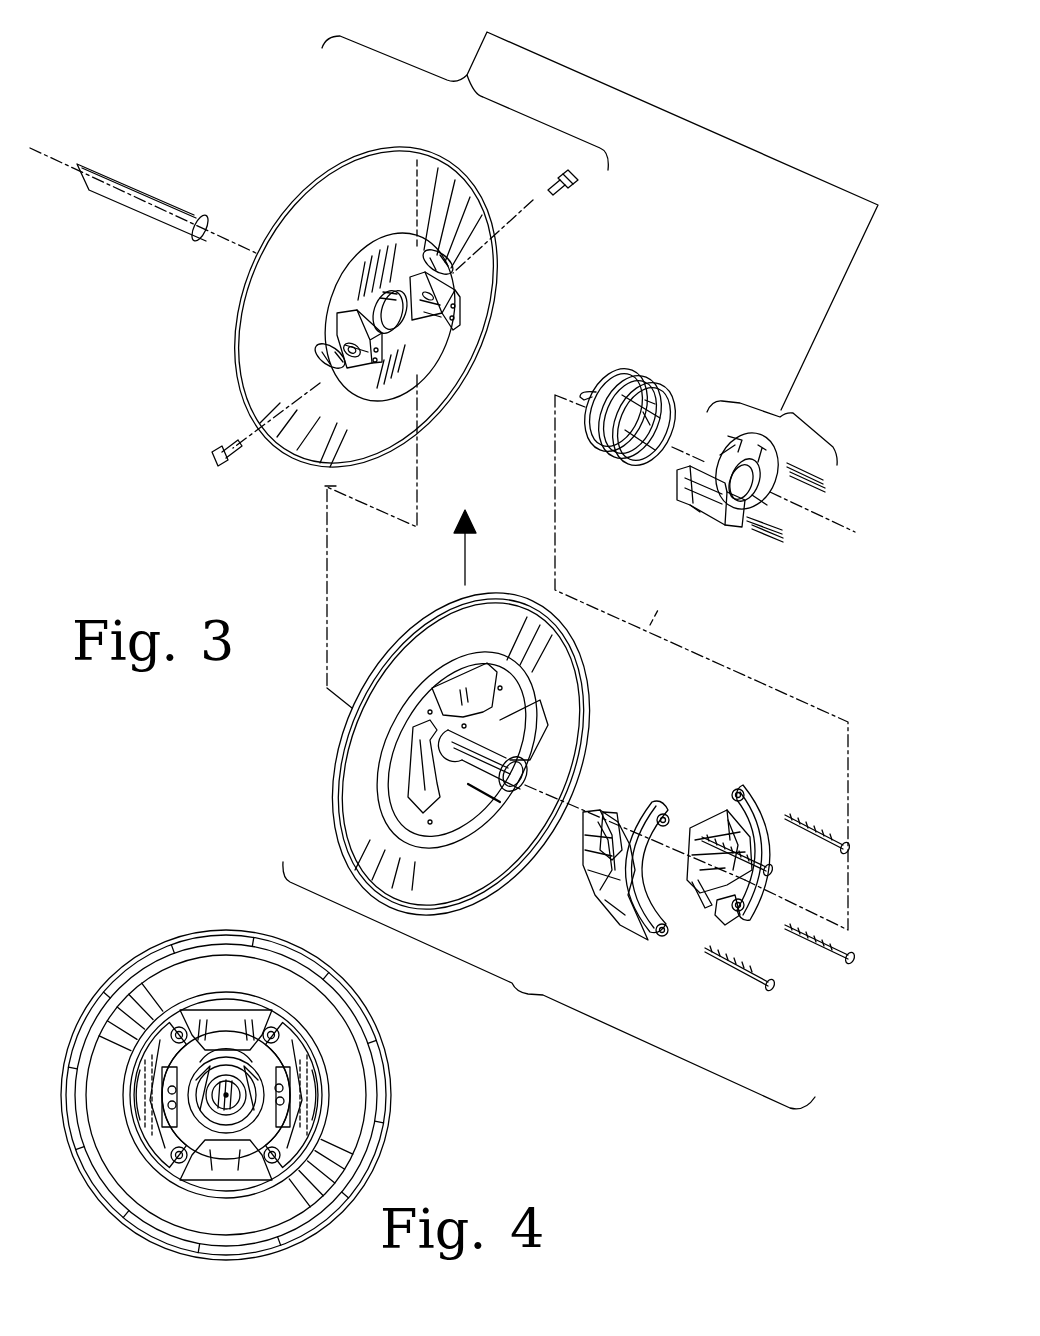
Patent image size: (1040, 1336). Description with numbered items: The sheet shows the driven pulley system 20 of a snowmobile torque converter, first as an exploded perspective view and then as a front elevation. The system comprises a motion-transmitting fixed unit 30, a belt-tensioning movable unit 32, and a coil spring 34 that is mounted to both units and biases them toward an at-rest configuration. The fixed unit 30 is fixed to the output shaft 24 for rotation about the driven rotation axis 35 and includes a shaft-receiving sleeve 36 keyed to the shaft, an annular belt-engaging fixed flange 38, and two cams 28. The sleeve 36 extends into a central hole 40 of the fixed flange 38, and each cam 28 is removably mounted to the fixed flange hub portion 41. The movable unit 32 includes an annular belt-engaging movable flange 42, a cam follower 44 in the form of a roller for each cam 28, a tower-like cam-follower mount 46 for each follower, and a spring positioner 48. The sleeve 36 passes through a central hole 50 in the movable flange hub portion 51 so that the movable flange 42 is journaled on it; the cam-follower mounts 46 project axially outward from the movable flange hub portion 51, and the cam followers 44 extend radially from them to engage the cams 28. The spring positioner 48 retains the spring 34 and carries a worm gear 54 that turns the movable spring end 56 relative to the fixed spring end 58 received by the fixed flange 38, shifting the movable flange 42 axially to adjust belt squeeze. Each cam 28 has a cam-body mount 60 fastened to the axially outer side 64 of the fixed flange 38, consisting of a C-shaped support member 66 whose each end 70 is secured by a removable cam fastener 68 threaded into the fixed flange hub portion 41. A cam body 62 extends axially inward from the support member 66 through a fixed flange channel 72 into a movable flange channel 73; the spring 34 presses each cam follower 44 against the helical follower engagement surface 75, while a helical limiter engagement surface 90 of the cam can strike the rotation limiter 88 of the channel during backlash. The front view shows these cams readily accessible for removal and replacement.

In FIG. 3, the driven pulley system 20 is at (180, 84).
In FIG. 4, the driven pulley system 20 is at (112, 942).
In FIG. 3, the output shaft 24 is at (122, 208).
In FIG. 4, the output shaft 24 is at (226, 1115).
In FIG. 3, the cam 28 is at (765, 770).
In FIG. 4, the cam 28 is at (300, 1035).
In FIG. 3, the motion-transmitting fixed unit 30 is at (549, 985).
In FIG. 3, the belt-tensioning movable unit 32 is at (715, 140).
In FIG. 3, the coil spring 34 is at (615, 385).
In FIG. 3, the driven rotation axis 35 is at (666, 598).
In FIG. 3, the shaft-receiving sleeve 36 is at (538, 795).
In FIG. 4, the shaft-receiving sleeve 36 is at (232, 1172).
In FIG. 3, the fixed flange 38 is at (598, 700).
In FIG. 4, the fixed flange 38 is at (208, 972).
In FIG. 3, the central hole 40 is at (462, 790).
In FIG. 3, the fixed flange hub portion 41 is at (495, 805).
In FIG. 4, the fixed flange hub portion 41 is at (260, 1012).
In FIG. 3, the movable flange 42 is at (292, 200).
In FIG. 3, the cam follower 44 is at (580, 183).
In FIG. 3, the cam-follower mount 46 is at (462, 335).
In FIG. 3, the spring positioner 48 is at (750, 560).
In FIG. 4, the spring positioner 48 is at (215, 1160).
In FIG. 3, the central hole 50 is at (390, 294).
In FIG. 3, the movable flange hub portion 51 is at (365, 272).
In FIG. 4, the worm gear 54 is at (210, 1060).
In FIG. 3, the movable spring end 56 is at (650, 395).
In FIG. 4, the movable spring end 56 is at (242, 1060).
In FIG. 3, the fixed spring end 58 is at (582, 393).
In FIG. 3, the cam-body mount 60 is at (800, 815).
In FIG. 4, the cam-body mount 60 is at (140, 1088).
In FIG. 3, the cam body 62 is at (592, 815).
In FIG. 3, the axially outer side 64 is at (482, 862).
In FIG. 4, the axially outer side 64 is at (385, 1100).
In FIG. 3, the support member 66 is at (765, 840).
In FIG. 4, the support member 66 is at (140, 1130).
In FIG. 3, the cam fastener 68 is at (775, 865).
In FIG. 4, the cam fastener 68 is at (170, 1032).
In FIG. 3, the end 70 is at (660, 805).
In FIG. 4, the end 70 is at (185, 1025).
In FIG. 3, the fixed flange channel 72 is at (515, 715).
In FIG. 4, the fixed flange channel 72 is at (155, 1045).
In FIG. 3, the movable flange channel 73 is at (455, 268).
In FIG. 3, the helical follower engagement surface 75 is at (618, 812).
In FIG. 3, the rotation limiter 88 is at (340, 368).
In FIG. 3, the helical limiter engagement surface 90 is at (598, 880).